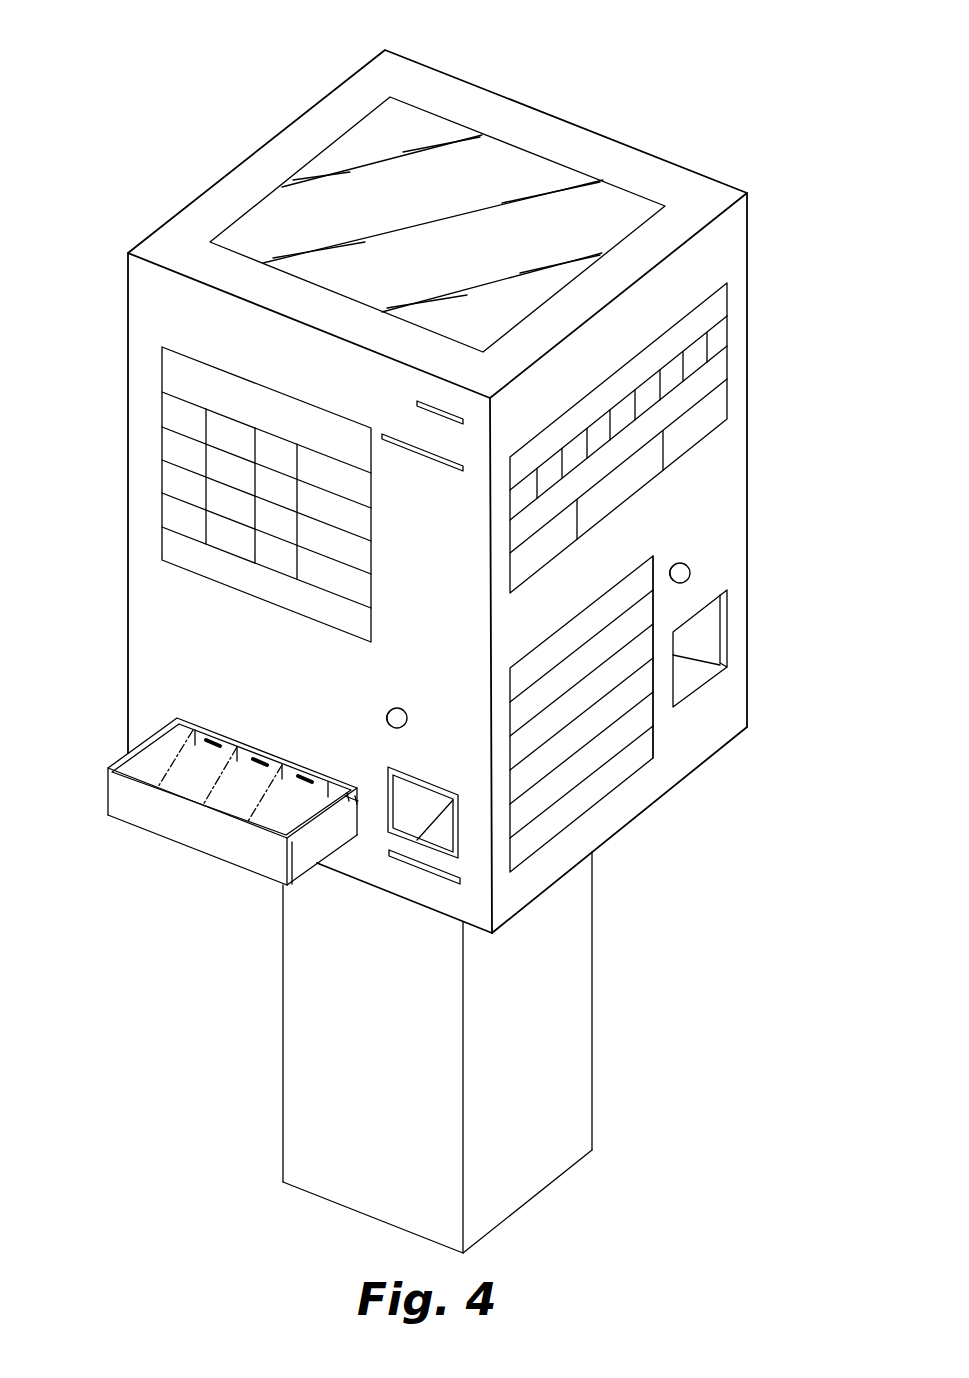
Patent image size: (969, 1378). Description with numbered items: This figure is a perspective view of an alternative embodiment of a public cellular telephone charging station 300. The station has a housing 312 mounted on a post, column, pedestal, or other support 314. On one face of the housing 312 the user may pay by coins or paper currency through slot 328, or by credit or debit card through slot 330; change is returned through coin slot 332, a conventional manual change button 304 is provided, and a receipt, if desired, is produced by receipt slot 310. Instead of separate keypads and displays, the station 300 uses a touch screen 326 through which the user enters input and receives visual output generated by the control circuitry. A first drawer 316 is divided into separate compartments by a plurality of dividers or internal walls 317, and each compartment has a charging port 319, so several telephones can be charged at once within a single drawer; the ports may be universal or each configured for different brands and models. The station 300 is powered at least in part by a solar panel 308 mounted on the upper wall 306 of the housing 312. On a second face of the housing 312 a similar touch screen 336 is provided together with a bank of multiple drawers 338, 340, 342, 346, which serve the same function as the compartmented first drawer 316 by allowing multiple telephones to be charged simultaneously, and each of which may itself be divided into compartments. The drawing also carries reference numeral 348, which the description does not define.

The charging station 300 is at (146, 204).
The manual change button 304 is at (387, 716).
The upper wall 306 is at (563, 118).
The solar panel 308 is at (272, 212).
The receipt slot 310 is at (493, 933).
The housing 312 is at (127, 591).
The support 314 is at (283, 1027).
The first drawer 316 is at (162, 838).
The dividers 317 is at (218, 778).
The charging port 319 is at (305, 776).
The touch screen 326 is at (365, 593).
The slot 328 is at (417, 402).
The slot 330 is at (412, 450).
The coin slot 332 is at (400, 792).
The touch screen 336 is at (713, 382).
The drawer 338 is at (628, 567).
The drawer 340 is at (525, 708).
The drawer 342 is at (525, 745).
The drawer 346 is at (645, 713).
The drawer panel edge 348 is at (640, 755).